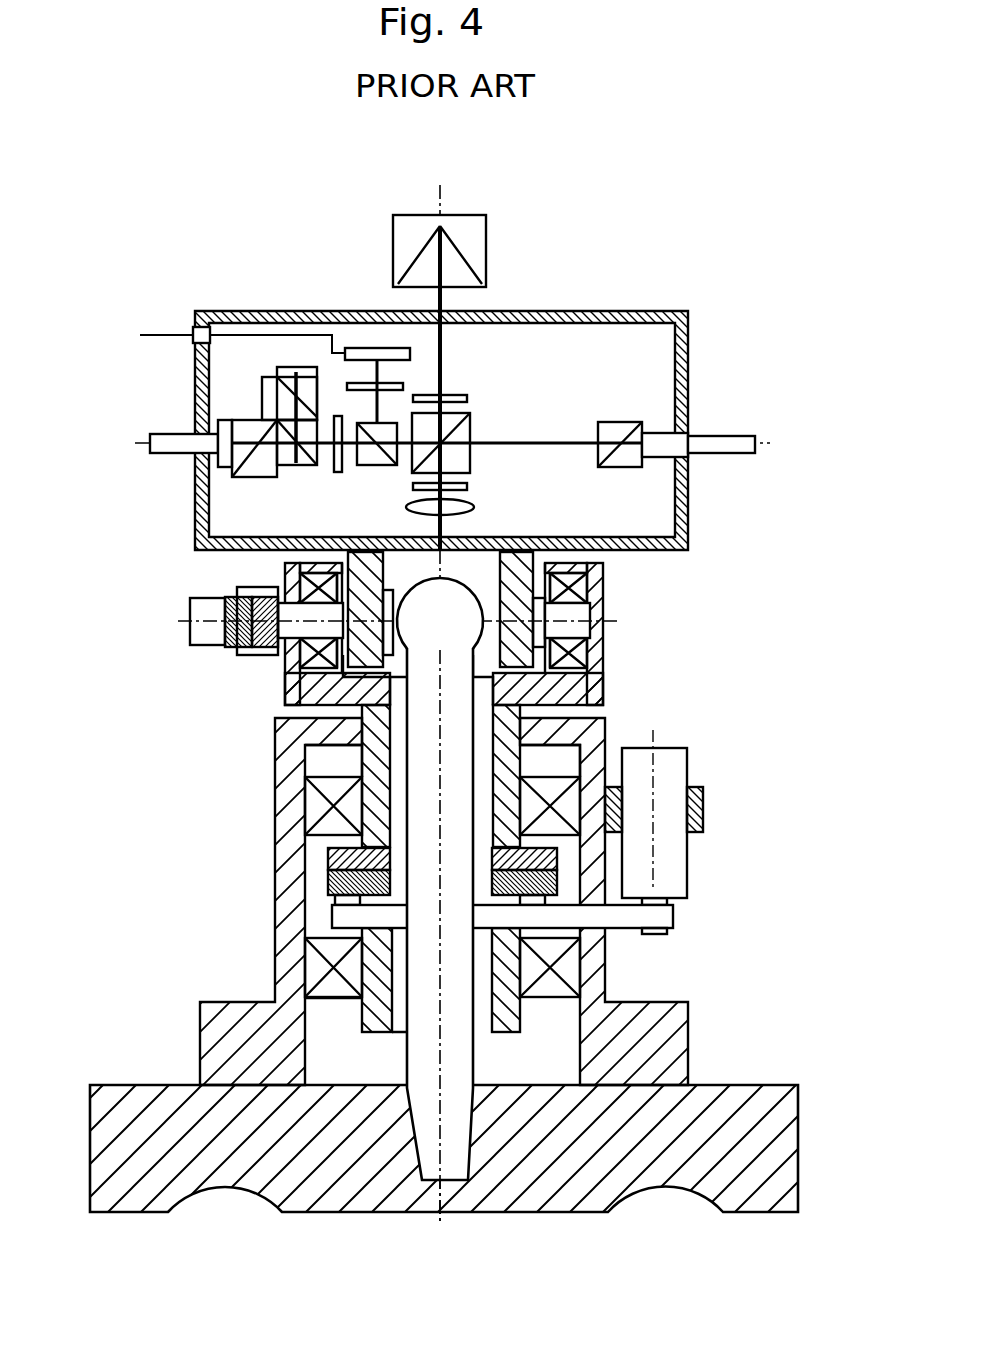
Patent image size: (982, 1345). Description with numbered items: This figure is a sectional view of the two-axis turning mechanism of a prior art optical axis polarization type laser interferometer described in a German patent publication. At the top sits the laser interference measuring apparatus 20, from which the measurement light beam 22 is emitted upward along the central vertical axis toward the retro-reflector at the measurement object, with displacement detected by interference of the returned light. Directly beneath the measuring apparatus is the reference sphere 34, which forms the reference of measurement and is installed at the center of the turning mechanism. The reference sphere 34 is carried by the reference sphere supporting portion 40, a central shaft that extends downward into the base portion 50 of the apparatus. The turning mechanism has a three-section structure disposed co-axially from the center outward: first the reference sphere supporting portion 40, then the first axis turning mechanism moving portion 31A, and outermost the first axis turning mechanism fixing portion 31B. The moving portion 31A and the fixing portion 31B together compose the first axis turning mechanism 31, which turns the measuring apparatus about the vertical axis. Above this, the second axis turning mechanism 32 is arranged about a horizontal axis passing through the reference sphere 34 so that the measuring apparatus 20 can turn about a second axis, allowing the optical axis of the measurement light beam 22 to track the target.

The laser interference measuring apparatus 20 is at (633, 355).
The measurement light beam 22 is at (448, 302).
The first axis turning mechanism 31 is at (433, 890).
The first axis turning mechanism moving portion 31A is at (523, 762).
The first axis turning mechanism fixing portion 31B is at (275, 847).
The second axis turning mechanism 32 is at (620, 592).
The reference sphere 34 is at (465, 612).
The reference sphere supporting portion 40 is at (429, 753).
The base portion 50 is at (167, 1108).